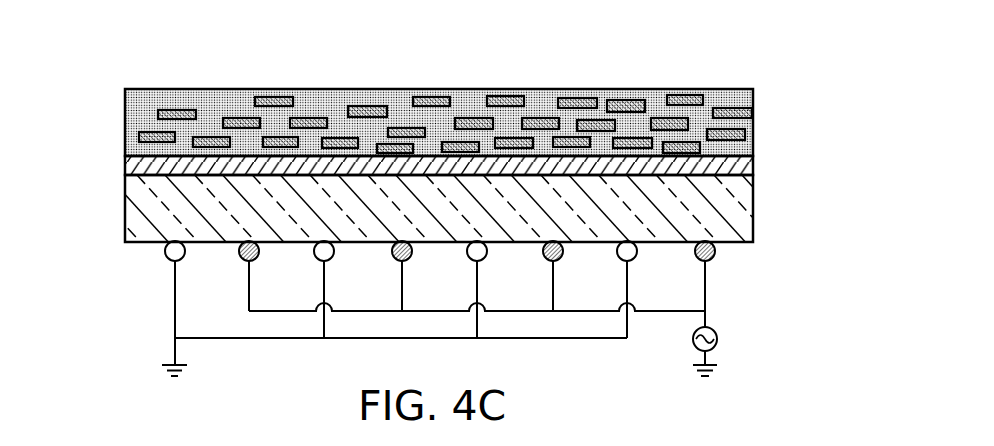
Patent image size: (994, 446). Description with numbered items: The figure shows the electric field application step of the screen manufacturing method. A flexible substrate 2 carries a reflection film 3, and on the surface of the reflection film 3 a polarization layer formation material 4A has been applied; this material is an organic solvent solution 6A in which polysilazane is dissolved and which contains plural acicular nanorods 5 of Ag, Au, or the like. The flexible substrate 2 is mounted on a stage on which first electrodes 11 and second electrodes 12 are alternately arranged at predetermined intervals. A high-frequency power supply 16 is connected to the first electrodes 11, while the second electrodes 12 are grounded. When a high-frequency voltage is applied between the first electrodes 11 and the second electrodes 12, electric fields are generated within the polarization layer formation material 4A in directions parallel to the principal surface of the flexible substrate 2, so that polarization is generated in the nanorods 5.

The flexible substrate 2 is at (747, 203).
The reflection film 3 is at (747, 168).
The polarization layer formation material 4A is at (483, 99).
The nanorod 5 is at (363, 106).
The organic solvent solution 6A is at (472, 102).
The first electrode 11 is at (243, 261).
The second electrode 12 is at (164, 252).
The high-frequency power supply 16 is at (717, 338).